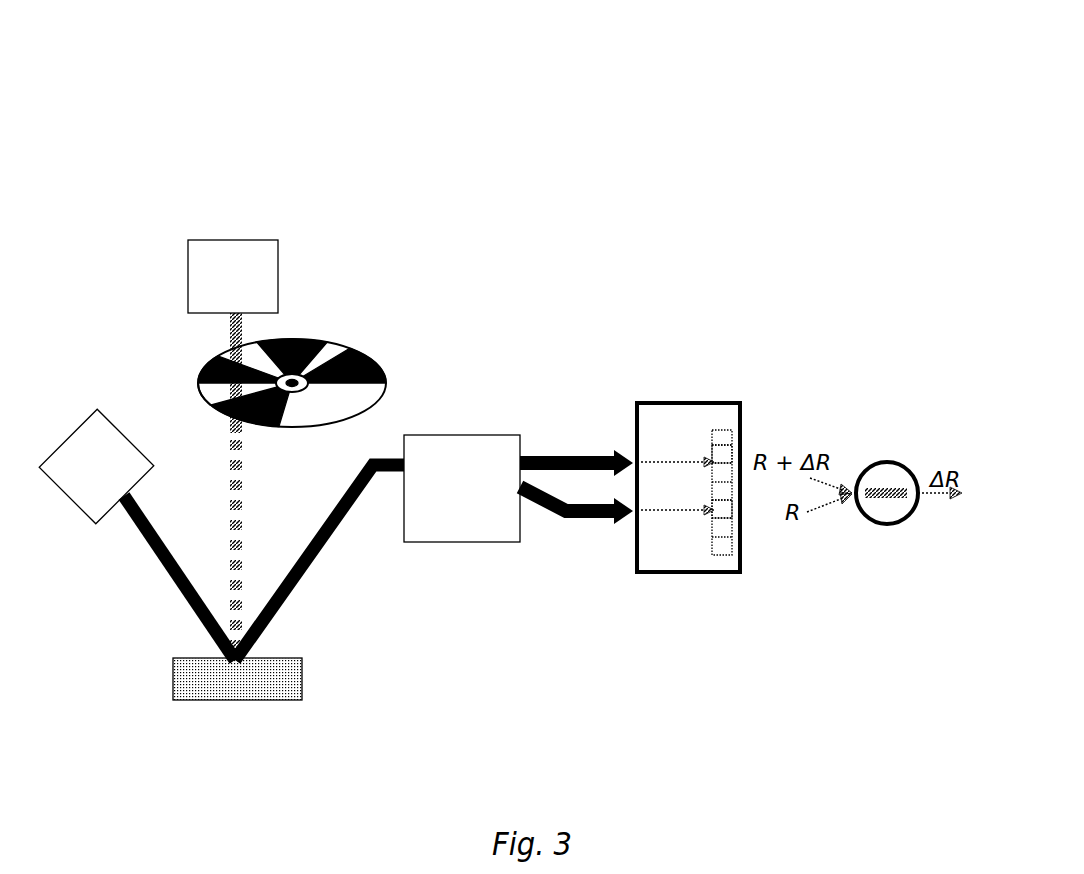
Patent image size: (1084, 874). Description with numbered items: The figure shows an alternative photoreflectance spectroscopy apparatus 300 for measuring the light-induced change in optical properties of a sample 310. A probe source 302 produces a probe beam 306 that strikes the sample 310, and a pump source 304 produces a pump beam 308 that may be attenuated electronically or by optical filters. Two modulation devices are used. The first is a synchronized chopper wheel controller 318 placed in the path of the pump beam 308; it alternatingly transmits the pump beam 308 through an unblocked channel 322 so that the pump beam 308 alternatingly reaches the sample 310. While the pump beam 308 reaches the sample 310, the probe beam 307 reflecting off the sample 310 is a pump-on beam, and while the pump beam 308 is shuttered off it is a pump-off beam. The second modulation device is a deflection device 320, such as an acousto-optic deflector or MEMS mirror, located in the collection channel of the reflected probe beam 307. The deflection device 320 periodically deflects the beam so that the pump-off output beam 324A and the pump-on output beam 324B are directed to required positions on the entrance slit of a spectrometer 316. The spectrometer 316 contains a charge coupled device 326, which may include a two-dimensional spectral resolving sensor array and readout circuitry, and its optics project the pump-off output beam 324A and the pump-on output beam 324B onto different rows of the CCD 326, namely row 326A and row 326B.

The photoreflectance (PR) spectroscopy apparatus 300 is at (569, 78).
The probe source 302 is at (77, 430).
The pump source 304 is at (187, 267).
The probe beam 306 is at (188, 585).
The probe beam reflecting off the sample 307 is at (293, 573).
The pump beam 308 is at (228, 332).
The sample 310 is at (177, 672).
The spectrometer 316 is at (677, 402).
The synchronized chopper wheel controller 318 is at (297, 340).
The deflection device 320 is at (457, 437).
The channel 322 is at (202, 393).
The pump-off output beam 324A is at (530, 457).
The pump-on output beam 324B is at (607, 523).
The Charge Coupled Device (CCD) 326 is at (735, 405).
The row 326A is at (725, 455).
The row 326B is at (725, 508).